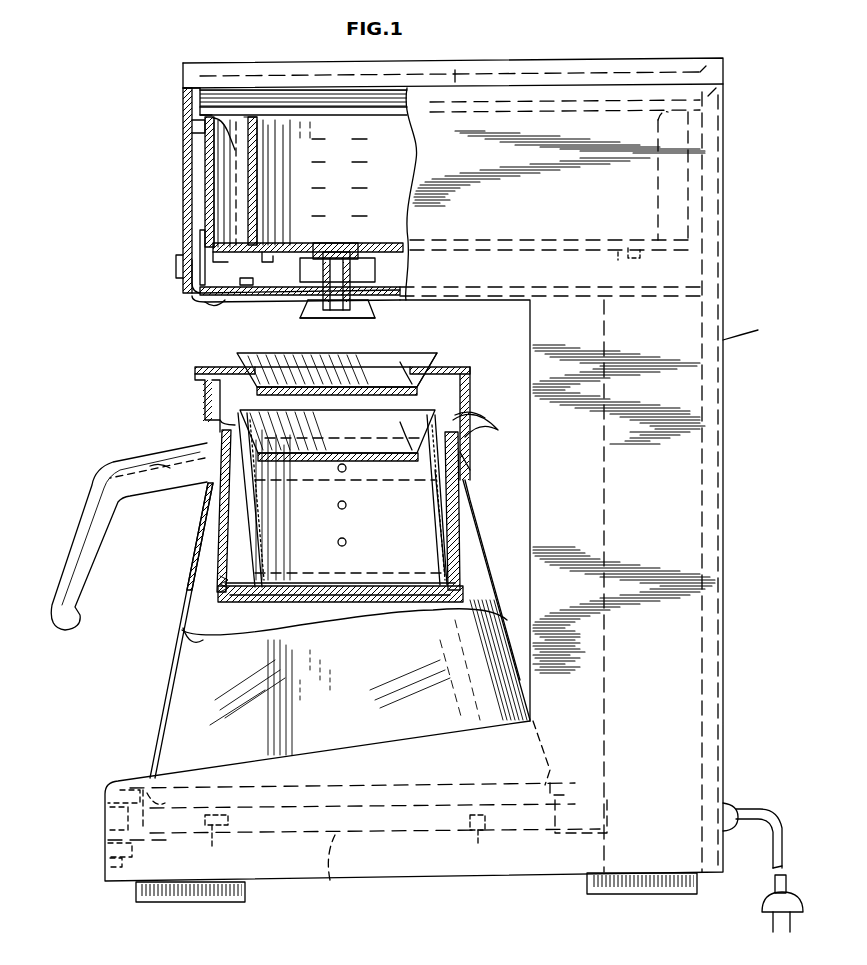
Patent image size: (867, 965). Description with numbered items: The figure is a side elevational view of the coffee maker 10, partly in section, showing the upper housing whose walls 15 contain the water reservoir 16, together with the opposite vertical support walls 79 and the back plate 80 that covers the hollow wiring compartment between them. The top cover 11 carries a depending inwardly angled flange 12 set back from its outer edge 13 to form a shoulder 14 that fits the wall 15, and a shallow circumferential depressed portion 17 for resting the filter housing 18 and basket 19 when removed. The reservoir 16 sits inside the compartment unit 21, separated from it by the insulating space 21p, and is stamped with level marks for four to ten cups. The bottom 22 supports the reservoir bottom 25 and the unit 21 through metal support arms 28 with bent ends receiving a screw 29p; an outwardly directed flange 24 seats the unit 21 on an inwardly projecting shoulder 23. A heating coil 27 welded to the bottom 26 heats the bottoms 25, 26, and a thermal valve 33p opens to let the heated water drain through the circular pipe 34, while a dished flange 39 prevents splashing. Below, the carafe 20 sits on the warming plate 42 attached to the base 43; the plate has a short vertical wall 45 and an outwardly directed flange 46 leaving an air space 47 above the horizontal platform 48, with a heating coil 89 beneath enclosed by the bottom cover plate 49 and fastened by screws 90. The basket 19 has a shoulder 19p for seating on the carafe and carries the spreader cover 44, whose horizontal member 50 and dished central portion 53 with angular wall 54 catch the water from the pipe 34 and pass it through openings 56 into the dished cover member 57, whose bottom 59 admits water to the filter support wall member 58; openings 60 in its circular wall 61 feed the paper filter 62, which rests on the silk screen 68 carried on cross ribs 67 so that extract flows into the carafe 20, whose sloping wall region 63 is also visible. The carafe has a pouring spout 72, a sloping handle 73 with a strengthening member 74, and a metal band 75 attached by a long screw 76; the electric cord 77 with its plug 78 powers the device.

The coffee maker 10 is at (155, 48).
The top cover 11 is at (600, 62).
The depending inwardly angled flange 12 is at (245, 95).
The outer edge of the cover 13 is at (183, 76).
The shoulder 14 is at (190, 86).
The walls of upper housing 15 is at (183, 152).
The water reservoir 16 is at (258, 175).
The shallow circumferential depressed portion 17 is at (452, 62).
The filter housing 18 is at (218, 590).
The basket 19 is at (228, 555).
The shoulder of basket 19p is at (212, 425).
The carafe 20 is at (183, 668).
The compartment unit 21 is at (210, 178).
The compartment 21p is at (235, 195).
The bottom 22 is at (200, 295).
The inwardly projecting shoulder 23 is at (190, 128).
The outwardly directed flange 24 is at (227, 137).
The bottom of water reservoir 25 is at (280, 242).
The bottom of compartment unit 26 is at (240, 240).
The heating coil 27 is at (265, 262).
The metal support arms 28 is at (200, 238).
The screw 29p is at (215, 305).
The thermal valve 33p is at (352, 248).
The circular pipe 34 is at (372, 308).
The outwardly dished flange 39 is at (305, 310).
The warming plate 42 is at (330, 805).
The base 43 is at (132, 873).
The spreader cover 44 is at (225, 345).
The short vertical wall 45 is at (165, 795).
The outwardly directed flange 46 is at (140, 790).
The air space 47 is at (112, 800).
The horizontal platform 48 is at (105, 815).
The bottom cover plate 49 is at (325, 883).
The horizontal member 50 is at (450, 380).
The dished circular central portion 53 is at (313, 373).
The angular wall 54 is at (418, 372).
The openings 56 is at (405, 385).
The dished plastic cover member 57 is at (405, 412).
The filter support wall member 58 is at (420, 530).
The bottom of cover member 59 is at (405, 448).
The small openings 60 is at (335, 542).
The circular wall 61 is at (428, 486).
The paper filter 62 is at (460, 545).
The carafe wall 63 is at (413, 605).
The cross ribs 67 is at (283, 603).
The silk screen 68 is at (375, 603).
The pouring spout 72 is at (470, 425).
The handle 73 is at (80, 500).
The plastic strengthening member 74 is at (200, 530).
The metal band 75 is at (470, 462).
The long screw 76 is at (178, 460).
The electric cord 77 is at (760, 809).
The plug 78 is at (766, 908).
The vertical support walls 79 is at (690, 410).
The back plate 80 is at (752, 327).
The metal heating coil 89 is at (342, 842).
The screws 90 is at (110, 860).